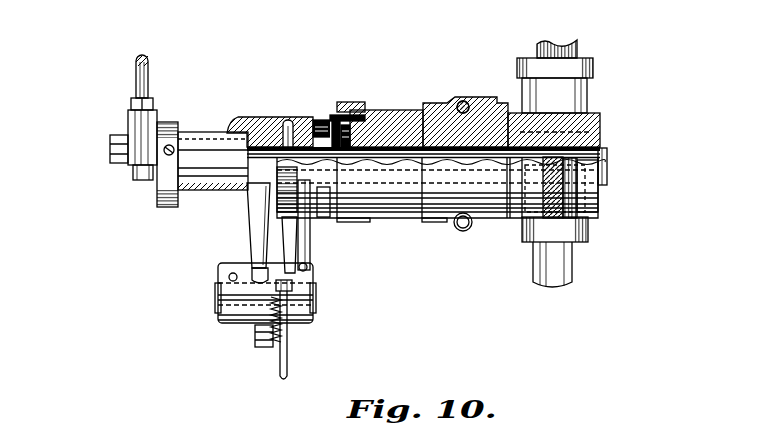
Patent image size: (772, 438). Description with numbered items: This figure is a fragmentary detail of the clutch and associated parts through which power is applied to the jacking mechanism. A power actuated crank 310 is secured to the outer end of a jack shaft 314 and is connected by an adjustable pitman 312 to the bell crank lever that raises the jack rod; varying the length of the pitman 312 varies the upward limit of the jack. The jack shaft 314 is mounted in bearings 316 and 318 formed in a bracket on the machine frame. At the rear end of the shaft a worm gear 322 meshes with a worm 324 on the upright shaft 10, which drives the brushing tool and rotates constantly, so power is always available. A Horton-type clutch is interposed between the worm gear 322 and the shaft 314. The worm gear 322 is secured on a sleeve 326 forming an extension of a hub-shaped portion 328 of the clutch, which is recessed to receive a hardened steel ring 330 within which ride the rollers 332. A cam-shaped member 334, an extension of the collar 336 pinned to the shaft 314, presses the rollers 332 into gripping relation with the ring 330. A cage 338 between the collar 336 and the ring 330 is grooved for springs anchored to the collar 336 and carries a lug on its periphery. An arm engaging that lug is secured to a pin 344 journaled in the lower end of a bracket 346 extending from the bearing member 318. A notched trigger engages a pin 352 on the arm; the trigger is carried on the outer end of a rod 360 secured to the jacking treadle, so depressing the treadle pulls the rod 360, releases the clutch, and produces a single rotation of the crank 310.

The upright shaft 10 is at (572, 265).
The power actuated crank 310 is at (157, 187).
The adjustable pitman 312 is at (133, 68).
The jack shaft 314 is at (607, 158).
The bearing 316 is at (440, 222).
The bearing 318 is at (200, 190).
The worm gear 322 is at (600, 117).
The worm 324 is at (590, 178).
The sleeve 326 is at (462, 147).
The hub-shaped portion 328 is at (393, 110).
The hardened steel ring 330 is at (360, 112).
The rollers 332 is at (342, 117).
The cam-shaped member 334 is at (333, 123).
The collar 336 is at (283, 116).
The cage 338 is at (325, 118).
The pin 344 is at (313, 293).
The bracket 346 is at (260, 238).
The pin 352 is at (313, 263).
The rod 360 is at (290, 357).